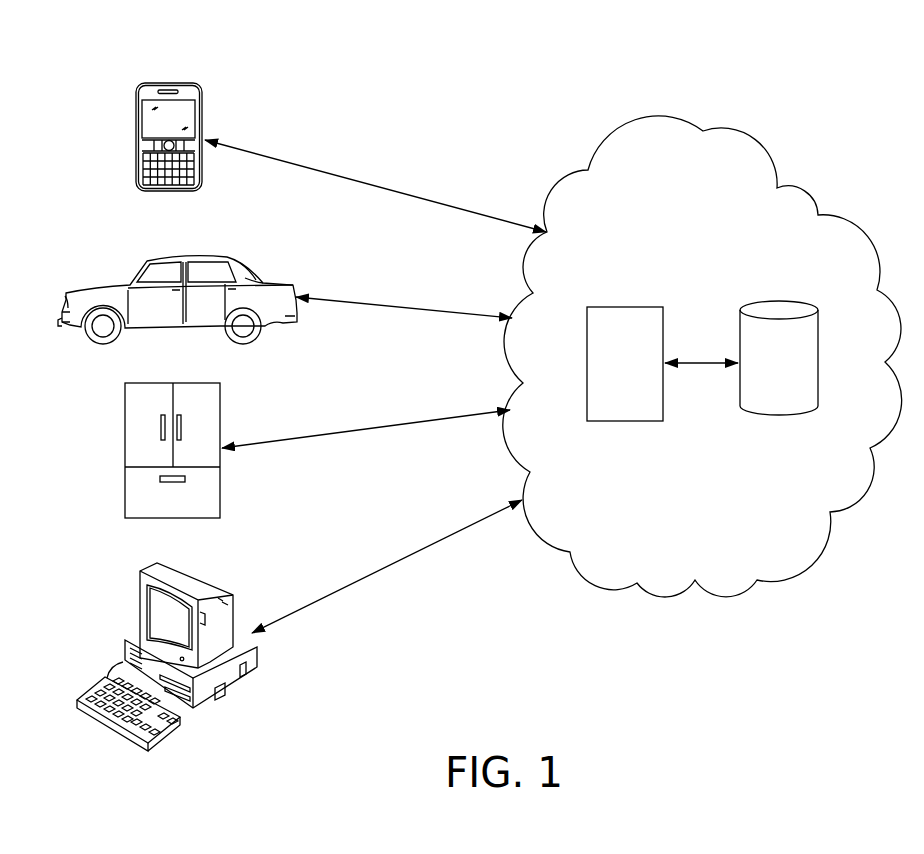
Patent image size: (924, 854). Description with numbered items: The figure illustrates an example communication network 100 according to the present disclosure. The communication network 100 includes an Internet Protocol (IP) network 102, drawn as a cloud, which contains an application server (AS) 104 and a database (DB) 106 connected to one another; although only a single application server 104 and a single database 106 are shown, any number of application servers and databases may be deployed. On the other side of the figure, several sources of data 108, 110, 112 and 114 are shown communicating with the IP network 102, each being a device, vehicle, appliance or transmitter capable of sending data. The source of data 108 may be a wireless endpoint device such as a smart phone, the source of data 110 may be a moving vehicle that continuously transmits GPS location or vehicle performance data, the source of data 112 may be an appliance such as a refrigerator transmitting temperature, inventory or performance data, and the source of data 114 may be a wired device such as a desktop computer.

The communication network 100 is at (521, 69).
The Internet Protocol (IP) network 102 is at (713, 257).
The application server 104 is at (625, 421).
The database 106 is at (780, 415).
The source of data 108 is at (136, 130).
The source of data 110 is at (213, 252).
The source of data 112 is at (222, 410).
The source of data 114 is at (235, 602).